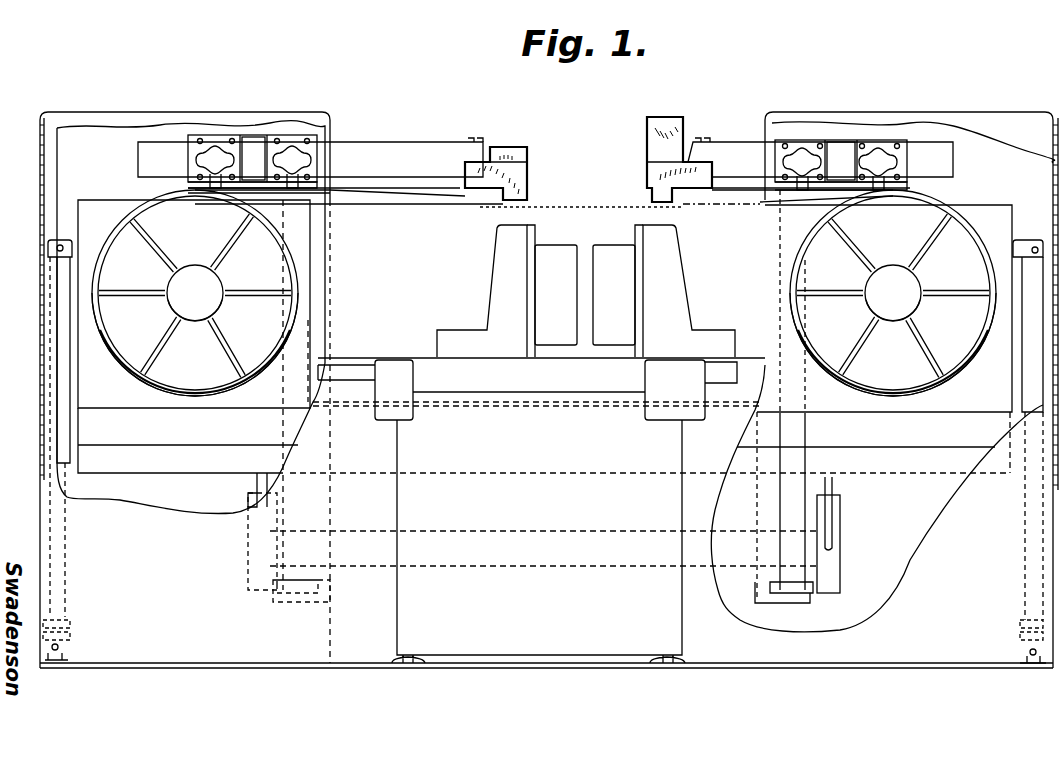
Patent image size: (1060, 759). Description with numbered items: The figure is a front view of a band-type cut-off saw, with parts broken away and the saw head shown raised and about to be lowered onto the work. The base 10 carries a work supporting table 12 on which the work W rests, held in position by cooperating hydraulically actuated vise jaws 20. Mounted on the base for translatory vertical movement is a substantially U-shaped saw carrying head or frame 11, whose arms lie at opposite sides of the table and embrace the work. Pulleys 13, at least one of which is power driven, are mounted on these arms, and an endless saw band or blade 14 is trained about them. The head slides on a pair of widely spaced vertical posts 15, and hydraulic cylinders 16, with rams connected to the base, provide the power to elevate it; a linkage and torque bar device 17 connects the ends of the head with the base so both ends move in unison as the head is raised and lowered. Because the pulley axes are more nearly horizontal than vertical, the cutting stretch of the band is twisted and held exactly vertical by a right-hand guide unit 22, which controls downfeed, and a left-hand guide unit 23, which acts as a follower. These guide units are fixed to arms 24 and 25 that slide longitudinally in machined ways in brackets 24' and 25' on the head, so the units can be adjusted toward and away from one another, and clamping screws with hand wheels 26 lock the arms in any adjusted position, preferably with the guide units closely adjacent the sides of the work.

The base 10 is at (238, 682).
The saw carrying head or frame 11 is at (966, 176).
The work supporting table 12 is at (556, 358).
The pulleys 13 is at (140, 230).
The saw band or blade 14 is at (478, 197).
The vertical posts 15 is at (290, 424).
The hydraulic cylinders 16 is at (62, 297).
The linkage and torque bar device 17 is at (840, 527).
The vise jaws 20 is at (496, 283).
The right-hand guide unit 22 is at (645, 181).
The left-hand guide unit 23 is at (536, 180).
The arm 24 is at (820, 149).
The bracket 24' is at (846, 133).
The arm 25 is at (310, 152).
The bracket 25' is at (251, 133).
The hand wheels 26 is at (215, 152).
The work W is at (583, 298).